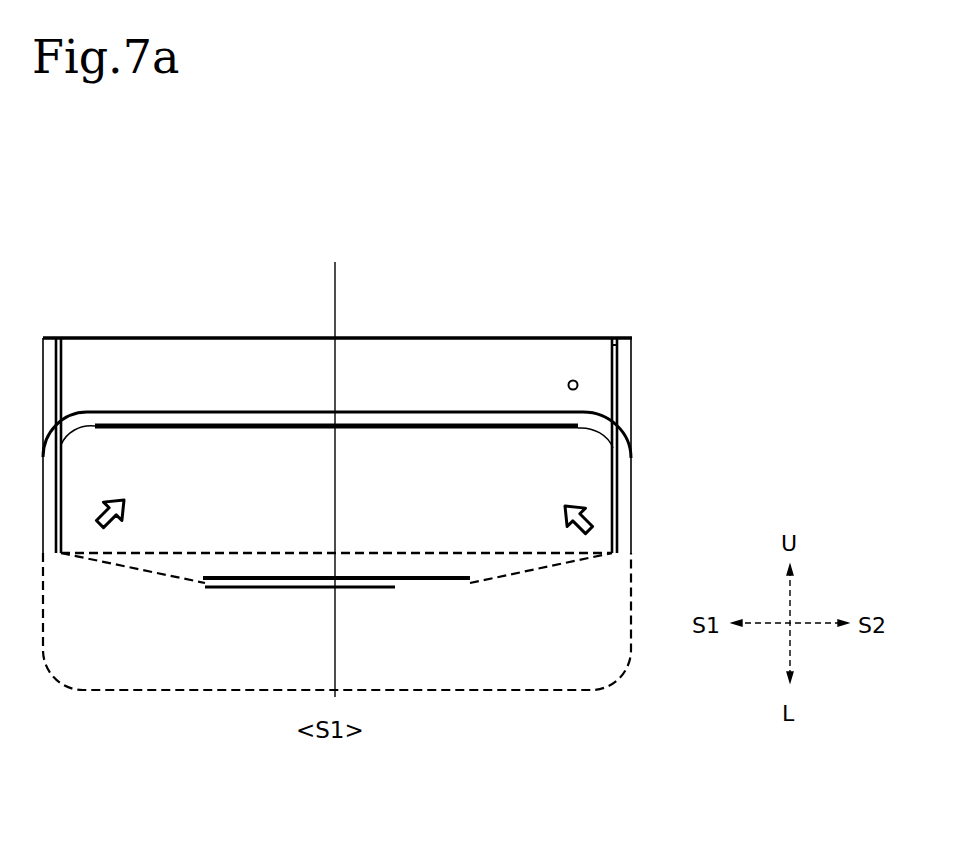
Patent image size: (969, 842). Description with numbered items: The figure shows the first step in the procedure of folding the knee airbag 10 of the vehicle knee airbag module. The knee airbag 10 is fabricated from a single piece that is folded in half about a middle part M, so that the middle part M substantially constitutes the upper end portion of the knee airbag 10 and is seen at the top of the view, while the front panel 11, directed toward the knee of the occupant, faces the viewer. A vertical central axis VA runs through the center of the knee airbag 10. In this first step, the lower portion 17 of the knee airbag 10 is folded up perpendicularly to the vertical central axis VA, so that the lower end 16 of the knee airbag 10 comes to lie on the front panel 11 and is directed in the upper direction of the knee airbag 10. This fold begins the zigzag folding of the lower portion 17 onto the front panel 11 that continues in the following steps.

The knee airbag 10 is at (641, 338).
The front panel 11 is at (538, 352).
The lower end 16 is at (466, 410).
The lower portion 17 is at (507, 481).
The middle part M is at (181, 337).
The vertical central axis VA is at (338, 283).